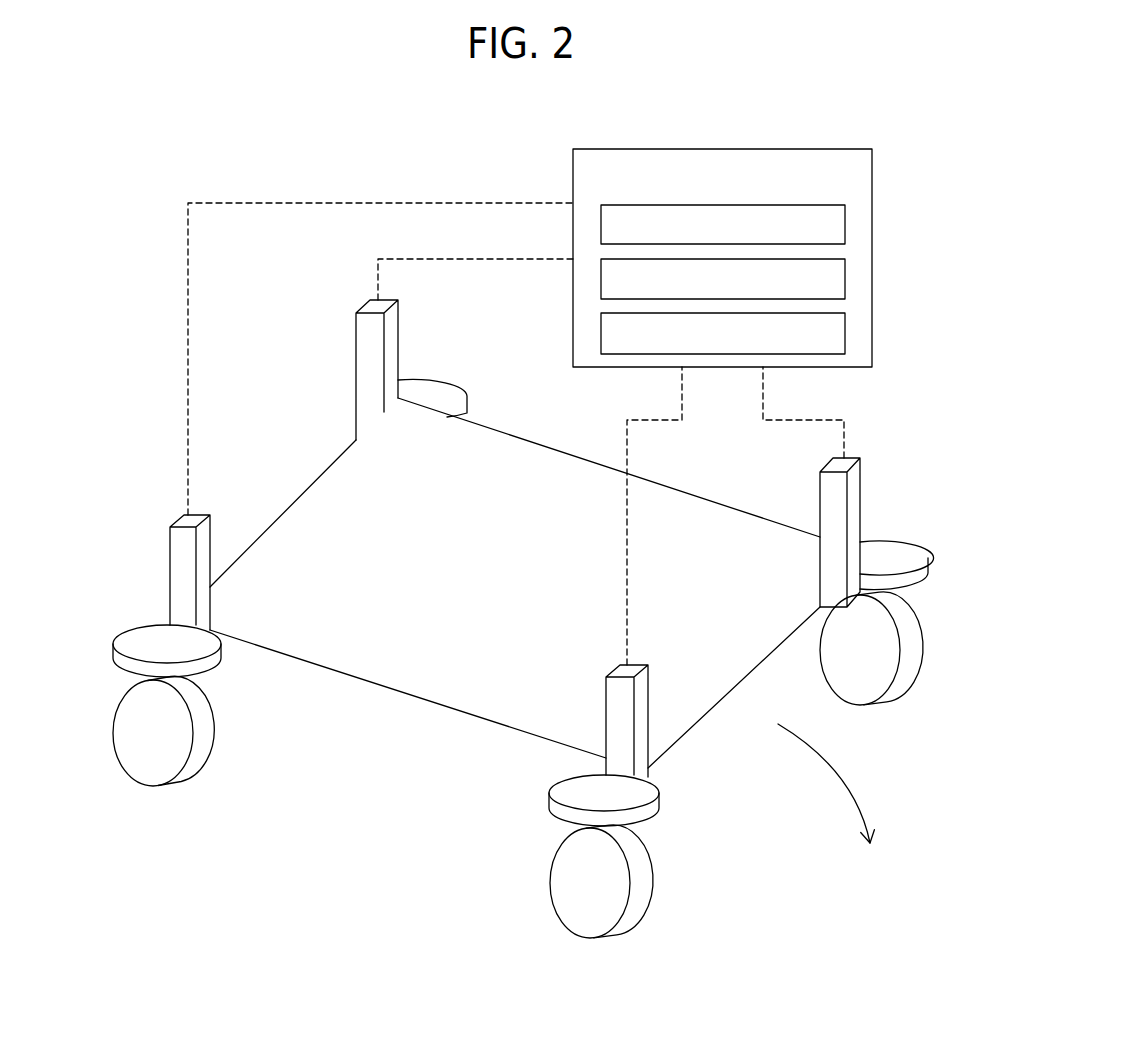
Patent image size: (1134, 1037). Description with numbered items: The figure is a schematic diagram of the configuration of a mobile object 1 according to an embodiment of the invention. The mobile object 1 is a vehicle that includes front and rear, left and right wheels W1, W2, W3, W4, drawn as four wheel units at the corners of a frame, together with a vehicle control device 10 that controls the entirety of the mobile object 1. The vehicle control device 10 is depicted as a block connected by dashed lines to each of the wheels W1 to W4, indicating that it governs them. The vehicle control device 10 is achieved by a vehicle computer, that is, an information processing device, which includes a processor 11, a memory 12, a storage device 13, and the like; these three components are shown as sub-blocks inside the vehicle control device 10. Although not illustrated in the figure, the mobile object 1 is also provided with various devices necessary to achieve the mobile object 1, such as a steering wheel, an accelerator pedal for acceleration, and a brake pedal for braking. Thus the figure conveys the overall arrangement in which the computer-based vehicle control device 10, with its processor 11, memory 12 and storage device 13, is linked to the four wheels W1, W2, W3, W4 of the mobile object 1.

The mobile object 1 is at (162, 140).
The vehicle control device 10 is at (720, 149).
The processor 11 is at (845, 225).
The memory 12 is at (845, 280).
The storage device 13 is at (845, 335).
The wheel W1 is at (876, 734).
The wheel W2 is at (684, 901).
The wheel W3 is at (325, 368).
The wheel W4 is at (135, 580).